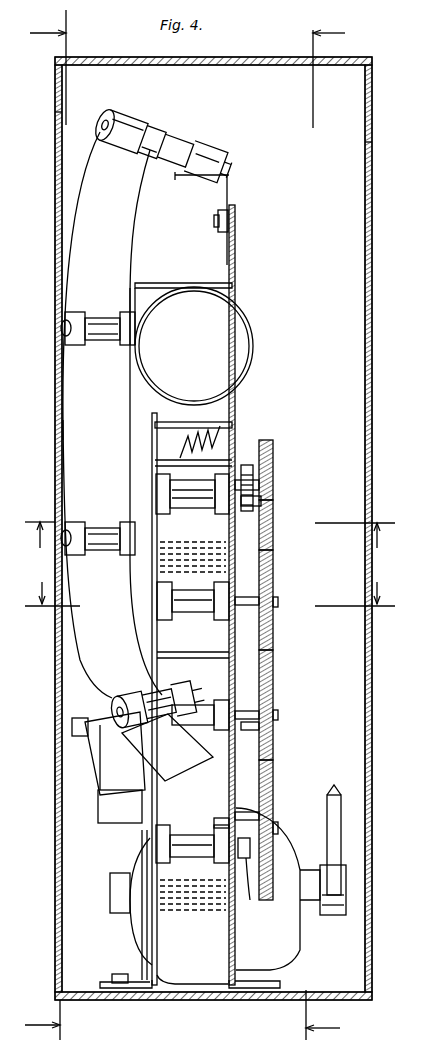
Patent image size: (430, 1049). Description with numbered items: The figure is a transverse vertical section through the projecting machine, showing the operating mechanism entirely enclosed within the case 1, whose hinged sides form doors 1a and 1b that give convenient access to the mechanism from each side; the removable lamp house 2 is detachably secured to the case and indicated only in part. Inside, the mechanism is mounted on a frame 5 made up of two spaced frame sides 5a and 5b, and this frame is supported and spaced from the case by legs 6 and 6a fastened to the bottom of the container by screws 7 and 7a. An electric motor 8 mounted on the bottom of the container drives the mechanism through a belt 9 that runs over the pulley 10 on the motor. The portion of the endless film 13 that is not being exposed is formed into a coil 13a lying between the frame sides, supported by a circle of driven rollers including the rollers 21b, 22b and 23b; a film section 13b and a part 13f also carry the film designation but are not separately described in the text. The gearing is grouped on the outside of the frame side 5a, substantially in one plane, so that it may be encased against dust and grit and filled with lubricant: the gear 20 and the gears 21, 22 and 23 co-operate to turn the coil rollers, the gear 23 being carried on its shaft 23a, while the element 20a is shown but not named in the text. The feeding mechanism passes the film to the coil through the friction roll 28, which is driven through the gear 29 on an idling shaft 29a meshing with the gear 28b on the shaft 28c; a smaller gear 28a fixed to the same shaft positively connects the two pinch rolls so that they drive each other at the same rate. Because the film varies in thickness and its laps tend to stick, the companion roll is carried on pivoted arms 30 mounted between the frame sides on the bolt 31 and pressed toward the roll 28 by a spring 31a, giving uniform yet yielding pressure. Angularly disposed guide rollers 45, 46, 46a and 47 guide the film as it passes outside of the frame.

The case 1 is at (282, 78).
The door 1a is at (57, 114).
The door 1b is at (363, 142).
The removable lamp house 2 is at (333, 533).
The frame 5 is at (209, 591).
The frame side 5a is at (237, 252).
The frame side 5b is at (154, 414).
The leg 6 is at (286, 967).
The leg 6a is at (142, 976).
The screw 7 is at (316, 983).
The screw 7a is at (112, 979).
The electric motor 8 is at (288, 852).
The belt 9 is at (336, 798).
The pulley 10 is at (346, 892).
The endless film 13 is at (195, 130).
The coil 13a is at (192, 968).
The film strip portion 13b is at (86, 428).
The film guide plate 13f is at (176, 772).
The gear 20 is at (274, 698).
The pinion 20a is at (262, 730).
The gear 21 is at (274, 576).
The roller 21b is at (218, 617).
The gear 22 is at (220, 352).
The roller 22b is at (212, 705).
The gear 23 is at (270, 818).
The shaft 23a is at (254, 888).
The roller 23b is at (216, 832).
The friction roll 28 is at (168, 492).
The smaller gear 28a is at (250, 462).
The gear 28b is at (274, 466).
The shaft 28c is at (274, 488).
The gear 29 is at (274, 525).
The idling shaft 29a is at (275, 505).
The pivoted arms 30 is at (248, 462).
The bolt 31 is at (168, 440).
The spring 31a is at (216, 440).
The guide roller 45 is at (88, 690).
The guide roller 46 is at (65, 488).
The guide roller 46a is at (80, 283).
The guide roller 47 is at (120, 110).